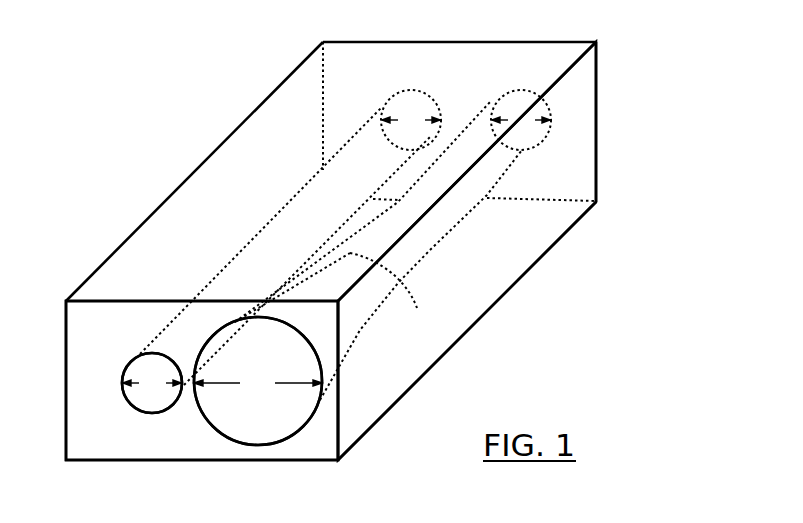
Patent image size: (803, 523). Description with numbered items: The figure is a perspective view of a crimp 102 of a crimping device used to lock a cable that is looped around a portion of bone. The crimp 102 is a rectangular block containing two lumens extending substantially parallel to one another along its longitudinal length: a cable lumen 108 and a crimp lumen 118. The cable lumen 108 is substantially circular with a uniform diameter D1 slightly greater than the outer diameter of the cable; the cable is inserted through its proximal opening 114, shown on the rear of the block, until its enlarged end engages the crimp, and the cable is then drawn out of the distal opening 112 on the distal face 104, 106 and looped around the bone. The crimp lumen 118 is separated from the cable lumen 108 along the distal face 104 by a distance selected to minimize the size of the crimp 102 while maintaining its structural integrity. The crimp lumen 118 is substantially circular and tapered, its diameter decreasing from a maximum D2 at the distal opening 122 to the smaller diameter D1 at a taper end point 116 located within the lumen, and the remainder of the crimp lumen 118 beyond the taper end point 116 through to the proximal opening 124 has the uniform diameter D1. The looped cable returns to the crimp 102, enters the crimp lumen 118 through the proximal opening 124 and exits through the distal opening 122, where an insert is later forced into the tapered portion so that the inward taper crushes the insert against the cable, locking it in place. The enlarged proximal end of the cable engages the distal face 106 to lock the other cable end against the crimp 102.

The crimp 102 is at (394, 372).
The distal face 104 is at (82, 381).
The distal face 106 is at (597, 180).
The cable lumen 108 is at (138, 397).
The distal opening 112 is at (160, 413).
The proximal opening 114 is at (412, 95).
The taper end point 116 is at (336, 295).
The crimp lumen 118 is at (247, 403).
The distal opening 122 is at (265, 433).
The proximal opening 124 is at (518, 90).